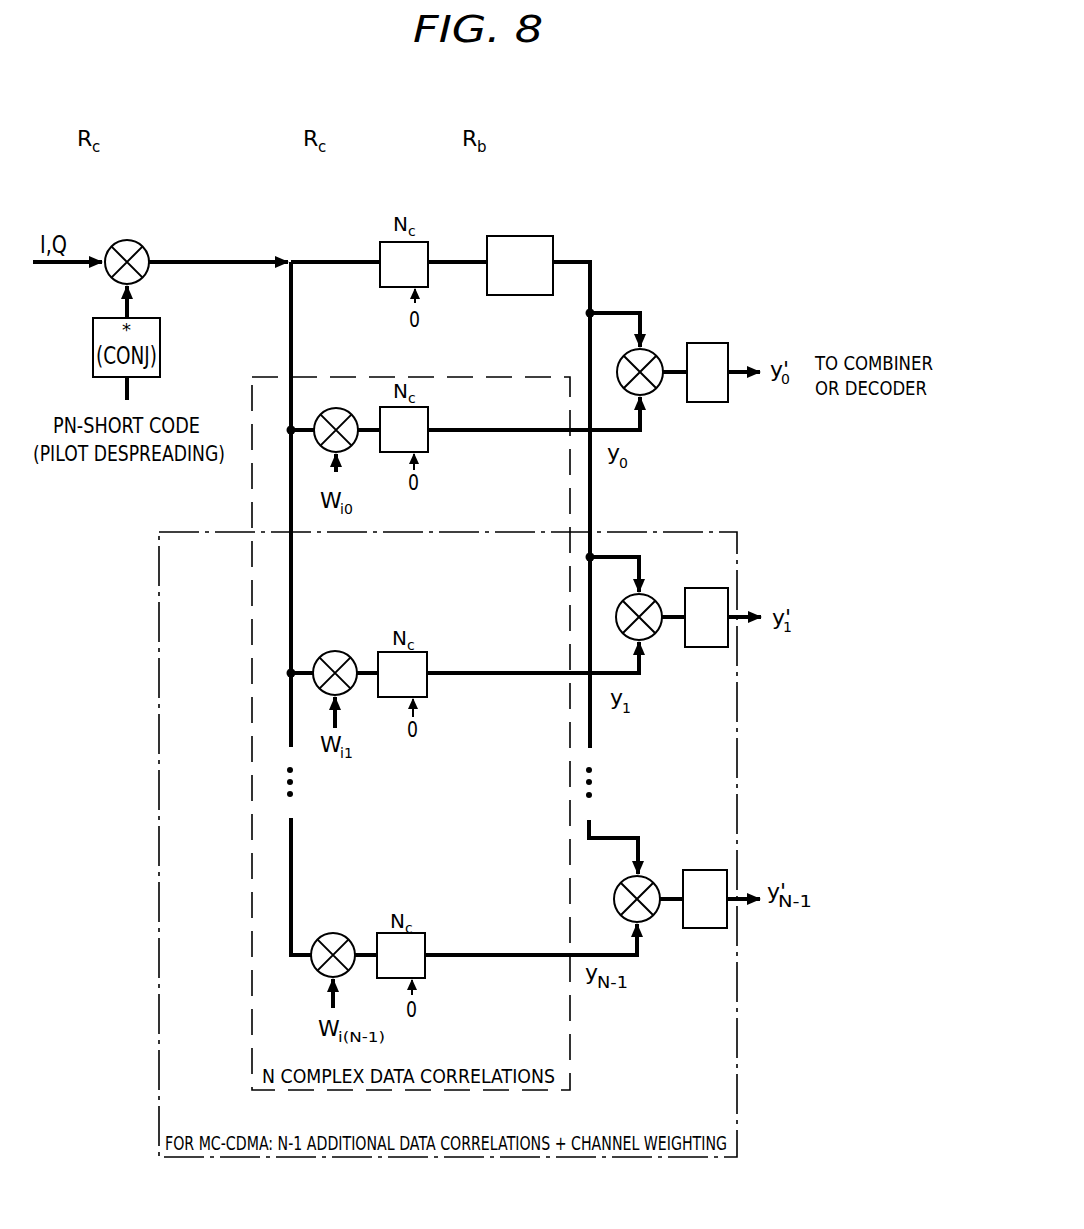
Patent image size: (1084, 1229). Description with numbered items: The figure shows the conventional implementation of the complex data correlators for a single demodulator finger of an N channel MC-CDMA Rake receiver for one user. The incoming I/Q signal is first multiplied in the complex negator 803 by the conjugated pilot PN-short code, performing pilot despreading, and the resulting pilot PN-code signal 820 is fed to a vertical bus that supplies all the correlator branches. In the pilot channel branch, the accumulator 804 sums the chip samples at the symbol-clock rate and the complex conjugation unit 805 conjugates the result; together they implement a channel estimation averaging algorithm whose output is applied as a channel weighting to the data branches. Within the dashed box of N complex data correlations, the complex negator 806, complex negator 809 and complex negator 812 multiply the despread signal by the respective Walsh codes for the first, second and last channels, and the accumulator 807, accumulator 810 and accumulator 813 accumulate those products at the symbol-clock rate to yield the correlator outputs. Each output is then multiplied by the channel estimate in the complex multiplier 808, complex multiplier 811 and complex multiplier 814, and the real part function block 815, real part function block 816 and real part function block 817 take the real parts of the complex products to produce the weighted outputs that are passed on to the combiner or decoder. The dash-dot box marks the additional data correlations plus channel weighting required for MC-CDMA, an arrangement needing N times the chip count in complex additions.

The complex negator 803 is at (127, 238).
The pilot PN-code signal 820 is at (227, 260).
The accumulator 804 is at (428, 240).
The complex conjugation unit 805 is at (520, 235).
The complex negator 806 is at (336, 407).
The accumulator 807 is at (428, 408).
The complex multiplier 808 is at (656, 355).
The real part function block 815 is at (707, 342).
The complex negator 809 is at (335, 651).
The accumulator 810 is at (428, 652).
The complex multiplier 811 is at (652, 594).
The real part function block 816 is at (707, 587).
The complex negator 812 is at (333, 933).
The accumulator 813 is at (427, 933).
The complex multiplier 814 is at (653, 876).
The real part function block 817 is at (705, 868).